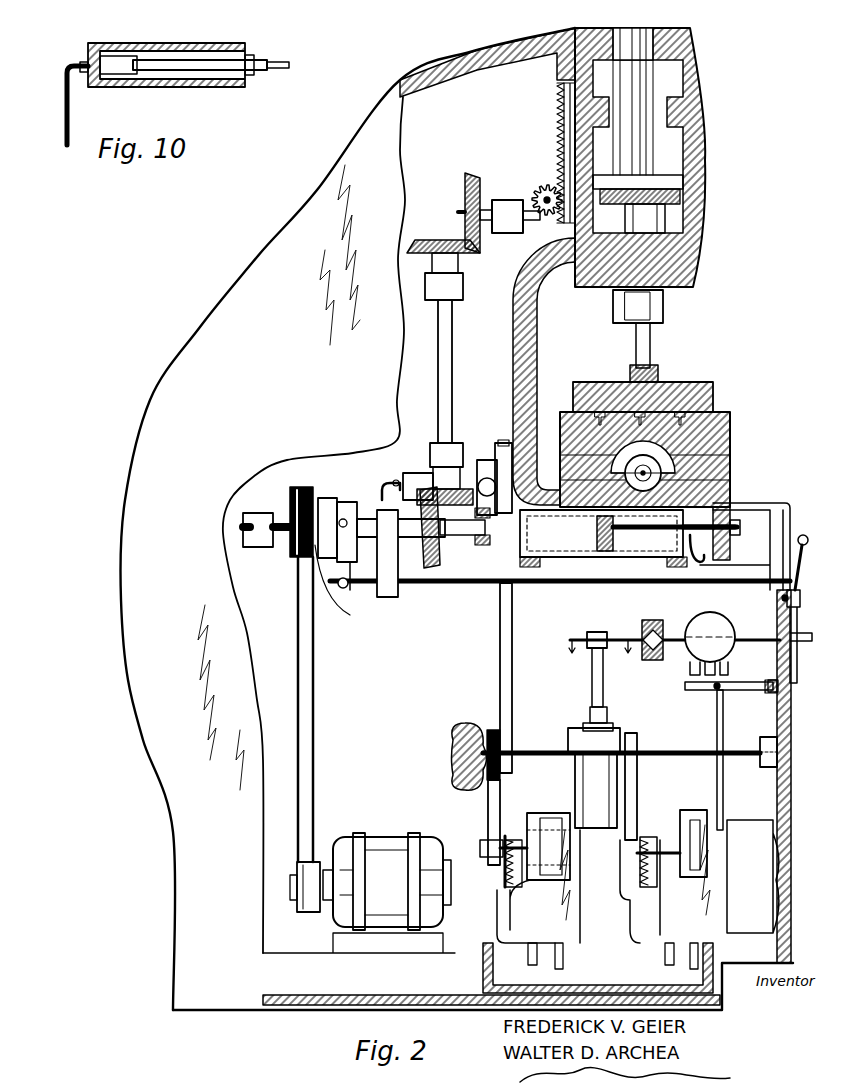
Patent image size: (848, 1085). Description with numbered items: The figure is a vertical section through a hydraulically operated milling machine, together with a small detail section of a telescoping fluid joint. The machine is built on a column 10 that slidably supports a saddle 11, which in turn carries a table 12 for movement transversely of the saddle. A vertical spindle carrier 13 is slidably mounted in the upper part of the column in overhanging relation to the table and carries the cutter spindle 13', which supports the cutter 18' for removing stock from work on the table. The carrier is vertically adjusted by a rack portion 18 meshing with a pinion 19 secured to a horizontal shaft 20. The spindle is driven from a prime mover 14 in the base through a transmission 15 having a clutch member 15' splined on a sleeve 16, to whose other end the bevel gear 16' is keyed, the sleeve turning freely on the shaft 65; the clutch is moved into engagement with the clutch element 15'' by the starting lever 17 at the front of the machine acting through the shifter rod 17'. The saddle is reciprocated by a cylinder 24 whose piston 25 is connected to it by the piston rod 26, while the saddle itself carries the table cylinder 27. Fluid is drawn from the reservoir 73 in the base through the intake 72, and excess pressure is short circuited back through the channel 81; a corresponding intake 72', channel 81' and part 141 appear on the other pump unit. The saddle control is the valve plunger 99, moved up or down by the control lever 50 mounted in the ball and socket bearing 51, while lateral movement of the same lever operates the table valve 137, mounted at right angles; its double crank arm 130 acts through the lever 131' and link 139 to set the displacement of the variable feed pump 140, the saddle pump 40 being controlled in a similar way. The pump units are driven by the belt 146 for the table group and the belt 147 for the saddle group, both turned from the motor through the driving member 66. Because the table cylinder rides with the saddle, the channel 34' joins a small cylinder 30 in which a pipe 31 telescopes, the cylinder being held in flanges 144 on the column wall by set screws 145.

In FIG. 2, the column 10 is at (178, 888).
In FIG. 2, the saddle 11 is at (735, 500).
In FIG. 2, the table 12 is at (718, 422).
In FIG. 2, the spindle carrier 13 is at (662, 157).
In FIG. 2, the cutter spindle 13' is at (670, 271).
In FIG. 2, the prime mover 14 is at (400, 836).
In FIG. 2, the transmission 15 is at (439, 372).
In FIG. 2, the clutch member 15' is at (297, 661).
In FIG. 2, the clutch element 15'' is at (344, 585).
In FIG. 2, the sleeve 16 is at (381, 526).
In FIG. 2, the bevel gear 16' is at (441, 536).
In FIG. 2, the starting lever 17 is at (743, 533).
In FIG. 2, the shifter rod 17' is at (560, 600).
In FIG. 2, the rack portion 18 is at (544, 153).
In FIG. 2, the cutter 18' is at (672, 370).
In FIG. 2, the pinion 19 is at (540, 186).
In FIG. 2, the horizontal shaft 20 is at (543, 198).
In FIG. 2, the cylinder 24 is at (648, 557).
In FIG. 2, the piston 25 is at (618, 556).
In FIG. 2, the piston rod 26 is at (695, 540).
In FIG. 2, the table cylinder 27 is at (675, 462).
In FIG. 10, the small cylinder 30 is at (160, 44).
In FIG. 2, the small cylinder 30 is at (420, 475).
In FIG. 10, the pipe 31 is at (163, 80).
In FIG. 10, the channel 34' is at (55, 106).
In FIG. 2, the feed pump 40 is at (553, 815).
In FIG. 2, the control lever 50 is at (814, 640).
In FIG. 2, the ball and socket bearing 51 is at (652, 664).
In FIG. 2, the shaft 65 is at (470, 548).
In FIG. 2, the driving member 66 is at (500, 698).
In FIG. 2, the intake 72 is at (544, 966).
In FIG. 2, the bolt 72' is at (675, 966).
In FIG. 2, the reservoir 73 is at (485, 962).
In FIG. 2, the channel 81 is at (517, 958).
In FIG. 2, the bolt 81' is at (650, 958).
In FIG. 2, the valve plunger 99 is at (592, 690).
In FIG. 2, the double crank arm 130 is at (688, 680).
In FIG. 2, the lever 131' is at (755, 709).
In FIG. 2, the table control valve 137 is at (696, 618).
In FIG. 2, the link 139 is at (722, 775).
In FIG. 2, the variable feed pump 140 is at (695, 812).
In FIG. 2, the lever bar 141 is at (646, 760).
In FIG. 2, the flanges 144 is at (507, 440).
In FIG. 2, the set screws 145 is at (487, 477).
In FIG. 2, the belt 146 is at (628, 820).
In FIG. 2, the belt 147 is at (498, 818).